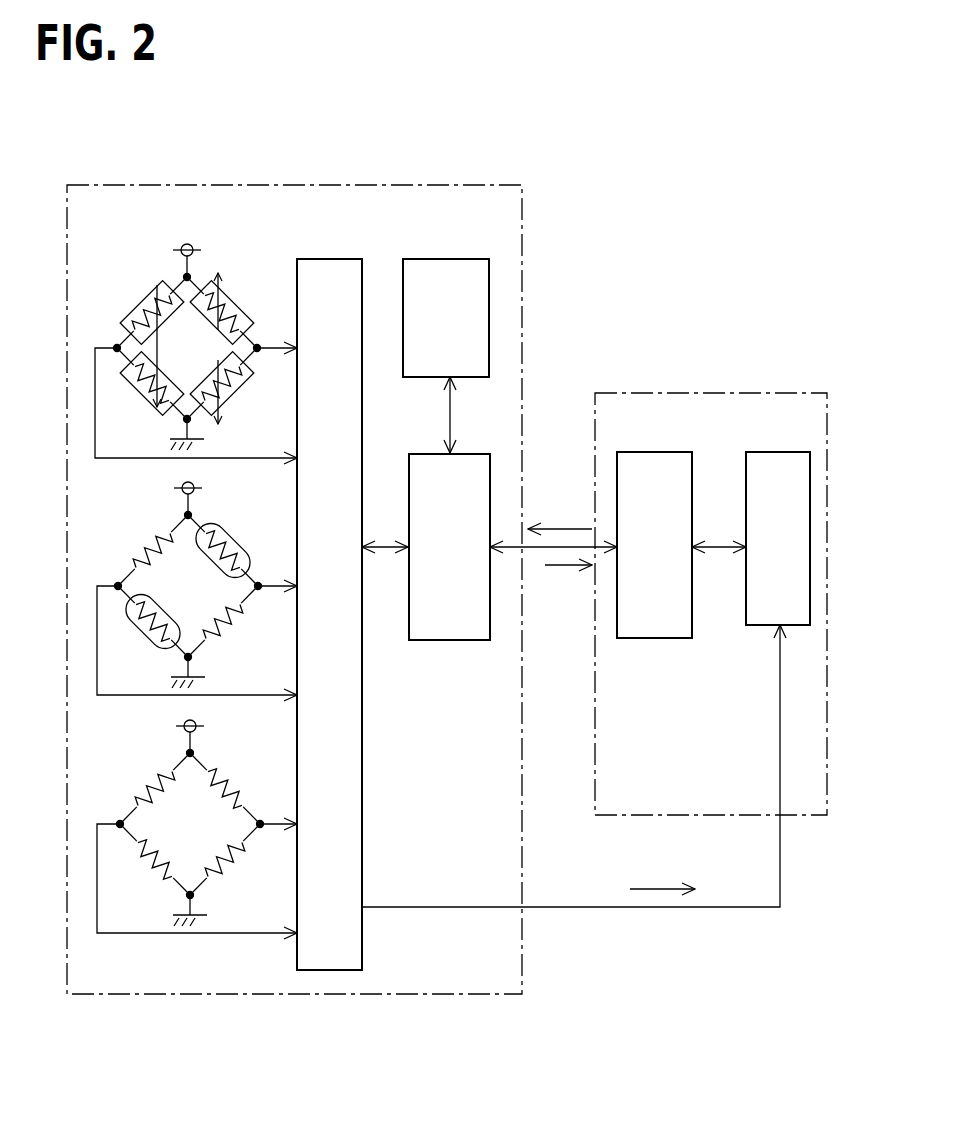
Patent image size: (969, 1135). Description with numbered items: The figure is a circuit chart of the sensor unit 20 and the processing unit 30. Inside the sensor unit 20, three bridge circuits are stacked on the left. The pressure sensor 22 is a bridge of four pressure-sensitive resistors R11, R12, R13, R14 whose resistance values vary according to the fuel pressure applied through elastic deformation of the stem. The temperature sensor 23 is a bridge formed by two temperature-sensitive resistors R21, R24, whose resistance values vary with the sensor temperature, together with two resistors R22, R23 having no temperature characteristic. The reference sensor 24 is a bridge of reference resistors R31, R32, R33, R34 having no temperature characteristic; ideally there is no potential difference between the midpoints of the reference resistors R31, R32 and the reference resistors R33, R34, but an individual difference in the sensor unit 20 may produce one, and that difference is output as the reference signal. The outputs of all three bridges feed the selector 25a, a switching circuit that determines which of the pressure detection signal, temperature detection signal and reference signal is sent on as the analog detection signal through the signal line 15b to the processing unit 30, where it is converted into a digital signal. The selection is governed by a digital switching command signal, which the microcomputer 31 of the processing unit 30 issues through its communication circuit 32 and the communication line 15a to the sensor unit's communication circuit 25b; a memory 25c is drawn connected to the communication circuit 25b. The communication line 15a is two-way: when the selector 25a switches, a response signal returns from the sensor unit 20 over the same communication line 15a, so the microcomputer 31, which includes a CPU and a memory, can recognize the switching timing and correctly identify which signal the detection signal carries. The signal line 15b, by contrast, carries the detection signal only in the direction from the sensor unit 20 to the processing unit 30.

The sensor unit 20 is at (244, 185).
The pressure sensor 22 is at (166, 346).
The temperature sensor 23 is at (166, 584).
The reference sensor 24 is at (166, 821).
The selector 25a is at (333, 259).
The communication circuit 25b is at (428, 453).
The memory 25c is at (447, 259).
The processing unit 30 is at (645, 393).
The microcomputer 31 is at (772, 452).
The communication circuit 32 is at (652, 452).
The communication line 15a is at (533, 552).
The signal line 15b is at (661, 909).
The pressure-sensitive resistor R11 is at (233, 306).
The pressure-sensitive resistor R12 is at (233, 395).
The pressure-sensitive resistor R13 is at (144, 306).
The pressure-sensitive resistor R14 is at (144, 395).
The temperature-sensitive resistor R21 is at (234, 544).
The resistor R22 is at (234, 633).
The resistor R23 is at (145, 544).
The temperature-sensitive resistor R24 is at (145, 633).
The reference resistor R31 is at (236, 782).
The reference resistor R32 is at (236, 871).
The reference resistor R33 is at (147, 782).
The reference resistor R34 is at (147, 871).